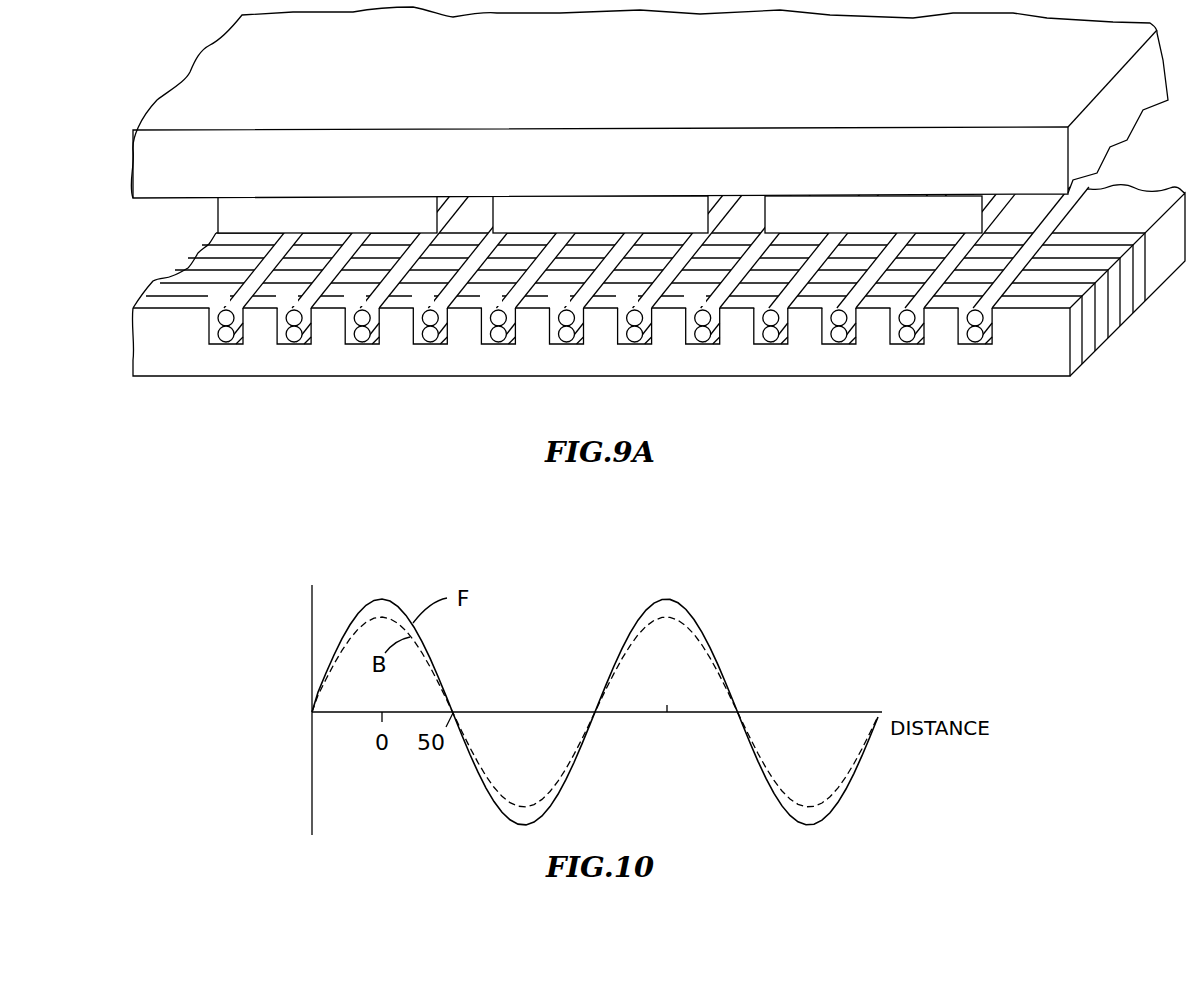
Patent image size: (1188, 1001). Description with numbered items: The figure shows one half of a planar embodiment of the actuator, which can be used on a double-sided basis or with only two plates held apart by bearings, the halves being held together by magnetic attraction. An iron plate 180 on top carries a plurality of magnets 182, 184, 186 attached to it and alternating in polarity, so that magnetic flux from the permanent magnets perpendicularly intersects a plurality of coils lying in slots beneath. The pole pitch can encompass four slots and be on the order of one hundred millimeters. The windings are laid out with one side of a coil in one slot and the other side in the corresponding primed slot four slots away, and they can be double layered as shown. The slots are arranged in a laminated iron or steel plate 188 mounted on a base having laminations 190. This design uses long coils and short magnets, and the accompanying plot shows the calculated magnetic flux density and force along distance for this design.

The iron plate 180 is at (165, 105).
The magnet 182 is at (357, 210).
The magnet 184 is at (650, 205).
The magnet 186 is at (890, 202).
The laminated iron or steel plate 188 is at (1028, 377).
The laminations 190 is at (1148, 336).